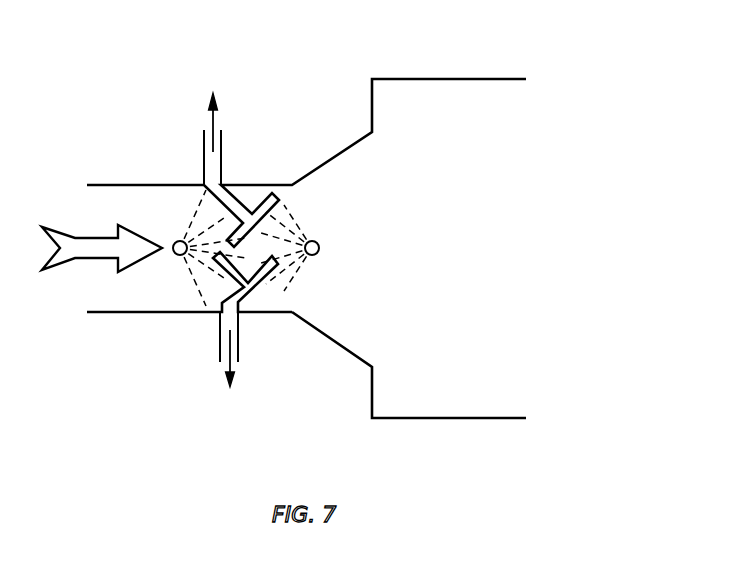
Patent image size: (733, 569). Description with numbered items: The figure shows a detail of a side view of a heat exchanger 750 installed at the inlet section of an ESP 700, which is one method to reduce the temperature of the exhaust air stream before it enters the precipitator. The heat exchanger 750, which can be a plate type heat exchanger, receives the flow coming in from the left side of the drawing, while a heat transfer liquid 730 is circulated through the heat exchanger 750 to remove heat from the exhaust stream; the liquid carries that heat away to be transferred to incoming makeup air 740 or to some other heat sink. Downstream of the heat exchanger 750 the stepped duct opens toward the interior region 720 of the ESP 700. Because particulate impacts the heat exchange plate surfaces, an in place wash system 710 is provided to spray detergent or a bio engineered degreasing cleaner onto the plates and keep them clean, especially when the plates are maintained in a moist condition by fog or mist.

The ESP 700 is at (351, 220).
The in place wash system 710 is at (178, 241).
The outlet chamber 720 is at (450, 262).
The heat transfer liquid 730 is at (233, 88).
The incoming makeup air 740 is at (97, 238).
The heat exchanger 750 is at (220, 333).